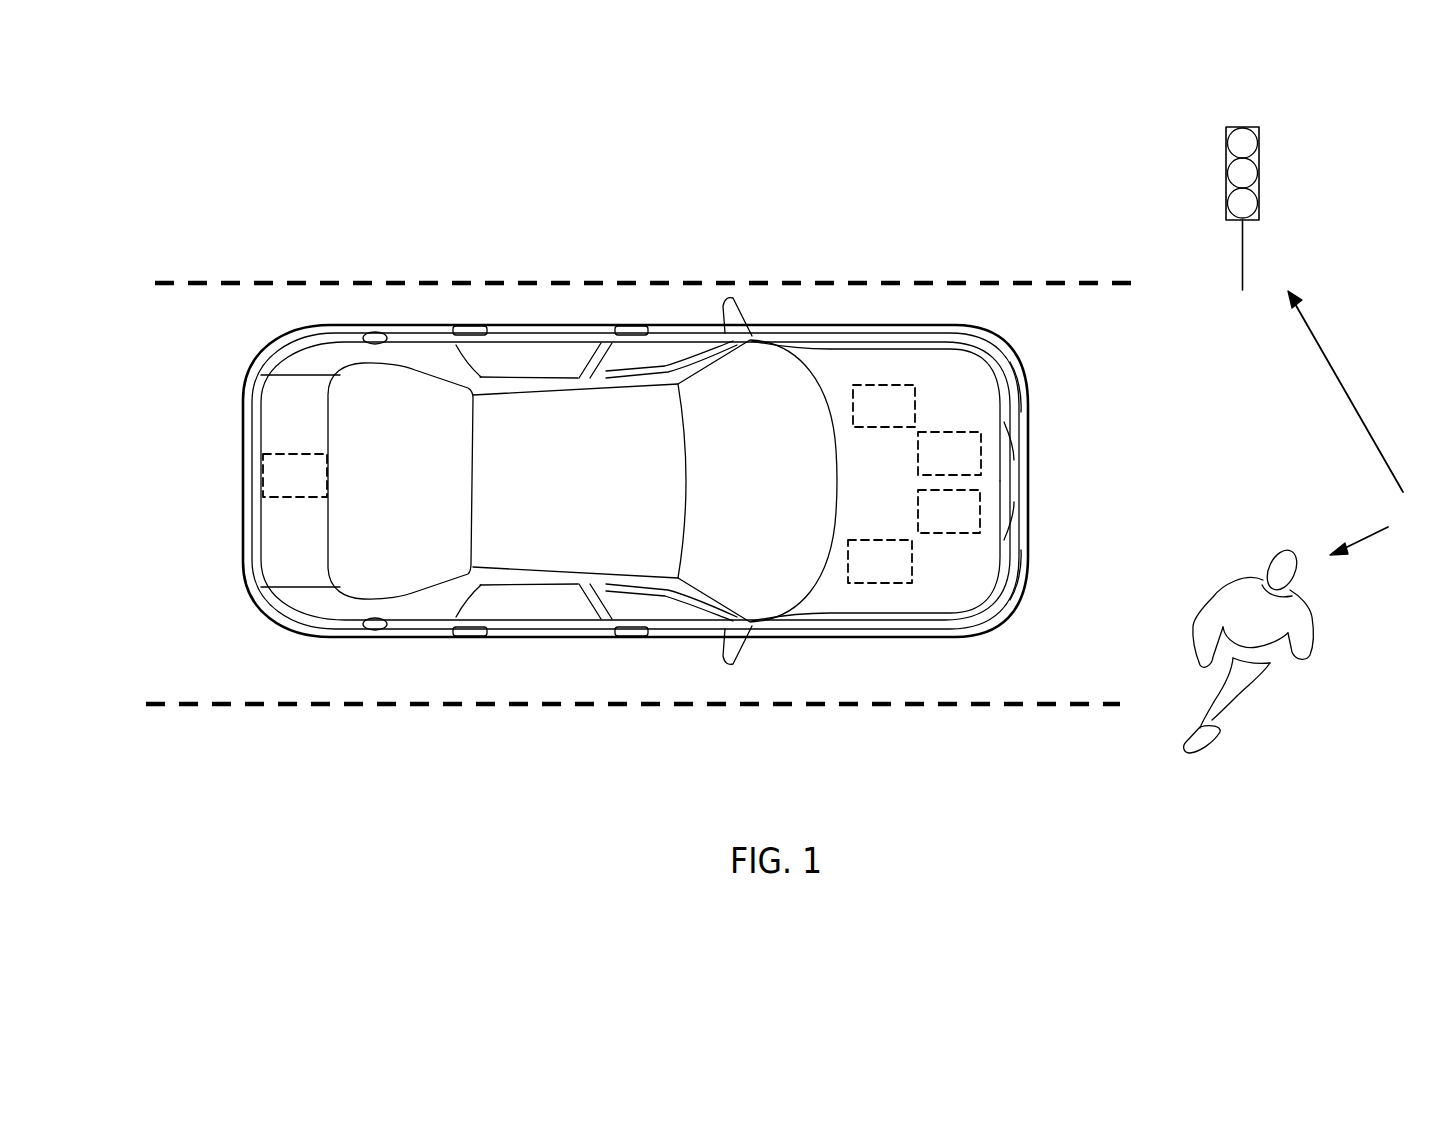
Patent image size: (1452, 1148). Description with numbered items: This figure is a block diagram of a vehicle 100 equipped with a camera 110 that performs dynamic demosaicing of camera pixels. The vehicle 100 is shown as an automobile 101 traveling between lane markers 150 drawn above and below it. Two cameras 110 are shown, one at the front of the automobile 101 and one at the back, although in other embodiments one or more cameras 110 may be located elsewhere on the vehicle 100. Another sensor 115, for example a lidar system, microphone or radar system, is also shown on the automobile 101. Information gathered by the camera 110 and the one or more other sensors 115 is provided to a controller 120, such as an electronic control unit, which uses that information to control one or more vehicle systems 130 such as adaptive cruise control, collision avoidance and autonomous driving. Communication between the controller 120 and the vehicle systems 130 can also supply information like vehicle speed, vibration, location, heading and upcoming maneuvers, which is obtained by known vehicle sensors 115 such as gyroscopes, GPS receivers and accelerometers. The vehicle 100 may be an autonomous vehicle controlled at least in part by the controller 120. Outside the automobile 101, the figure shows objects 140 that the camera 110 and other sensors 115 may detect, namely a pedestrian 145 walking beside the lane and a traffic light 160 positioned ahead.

The vehicle 100 is at (577, 481).
The automobile 101 is at (242, 417).
The camera 110 is at (314, 489).
The sensor 115 is at (968, 525).
The controller 120 is at (903, 419).
The vehicle systems 130 is at (899, 575).
The objects 140 is at (1366, 423).
The pedestrian 145 is at (1307, 638).
The lane markers 150 is at (1057, 286).
The traffic light 160 is at (1224, 208).